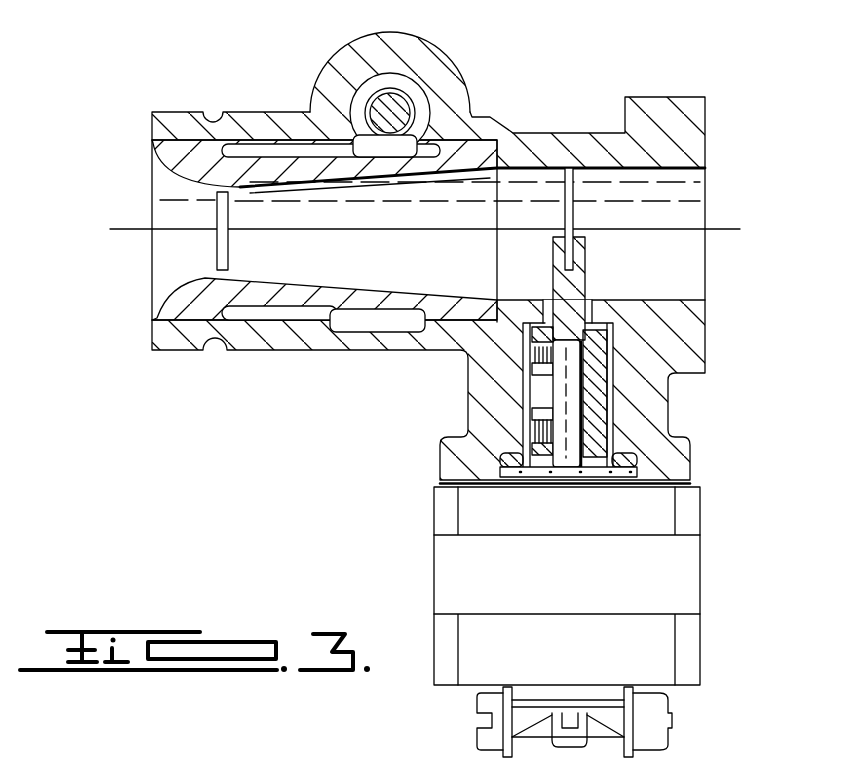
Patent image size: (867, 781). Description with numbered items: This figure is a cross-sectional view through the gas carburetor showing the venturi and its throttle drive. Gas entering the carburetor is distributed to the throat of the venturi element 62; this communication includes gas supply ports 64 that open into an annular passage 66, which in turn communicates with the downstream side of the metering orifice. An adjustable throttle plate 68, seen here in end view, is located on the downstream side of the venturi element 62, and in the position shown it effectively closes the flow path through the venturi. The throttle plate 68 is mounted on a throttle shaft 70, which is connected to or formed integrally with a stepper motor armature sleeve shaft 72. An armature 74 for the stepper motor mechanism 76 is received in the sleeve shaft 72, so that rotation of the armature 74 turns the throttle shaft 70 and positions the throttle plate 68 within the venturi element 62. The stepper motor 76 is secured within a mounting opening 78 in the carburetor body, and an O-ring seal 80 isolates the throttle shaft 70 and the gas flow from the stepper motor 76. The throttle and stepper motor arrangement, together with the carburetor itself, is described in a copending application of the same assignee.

The venturi element 62 is at (267, 163).
The gas supply ports 64 is at (222, 250).
The annular passage 66 is at (322, 150).
The adjustable throttle plate 68 is at (570, 168).
The throttle shaft 70 is at (580, 283).
The stepper motor armature sleeve shaft 72 is at (598, 400).
The armature 74 is at (560, 395).
The stepper motor mechanism 76 is at (675, 570).
The mounting opening 78 is at (505, 480).
The O-ring seal 80 is at (620, 462).